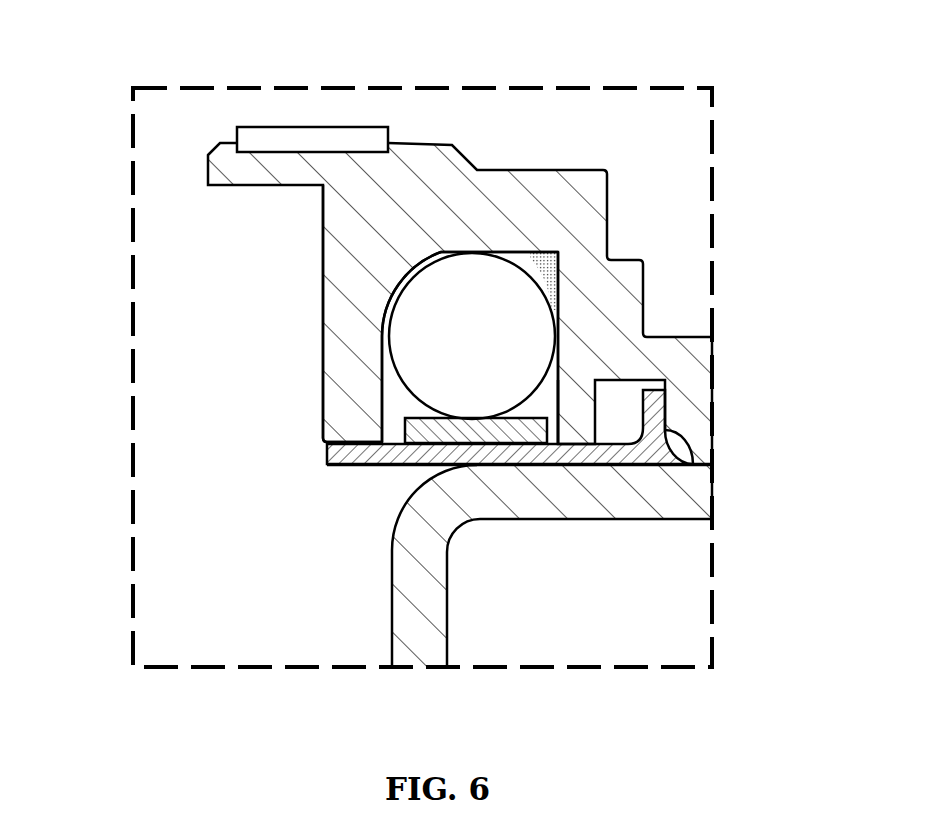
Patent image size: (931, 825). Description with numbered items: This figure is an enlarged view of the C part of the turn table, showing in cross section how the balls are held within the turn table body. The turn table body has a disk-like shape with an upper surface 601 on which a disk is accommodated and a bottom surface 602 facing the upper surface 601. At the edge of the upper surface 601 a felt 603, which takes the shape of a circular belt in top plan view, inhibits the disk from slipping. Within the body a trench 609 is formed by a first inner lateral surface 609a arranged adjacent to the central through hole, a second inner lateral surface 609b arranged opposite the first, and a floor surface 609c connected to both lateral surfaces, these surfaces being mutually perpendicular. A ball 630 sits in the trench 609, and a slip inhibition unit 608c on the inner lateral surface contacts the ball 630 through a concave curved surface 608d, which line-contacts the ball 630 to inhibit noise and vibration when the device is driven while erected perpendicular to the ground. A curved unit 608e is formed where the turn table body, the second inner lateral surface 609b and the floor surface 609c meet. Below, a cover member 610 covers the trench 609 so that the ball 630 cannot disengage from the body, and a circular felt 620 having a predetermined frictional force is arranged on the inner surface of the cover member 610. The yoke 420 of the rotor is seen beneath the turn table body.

The C part C is at (132, 147).
The upper surface 601 is at (431, 143).
The bottom surface 602 is at (693, 463).
The felt 603 is at (268, 138).
The slip inhibition unit 608c is at (572, 245).
The concave curved surface 608d is at (548, 272).
The curved unit 608e is at (398, 285).
The trench 609 is at (352, 374).
The first inner lateral surface 609a is at (553, 410).
The second inner lateral surface 609b is at (372, 397).
The floor surface 609c is at (478, 251).
The cover member 610 is at (330, 464).
The circular felt 620 is at (420, 442).
The ball 630 is at (425, 328).
The yoke 420 is at (443, 627).